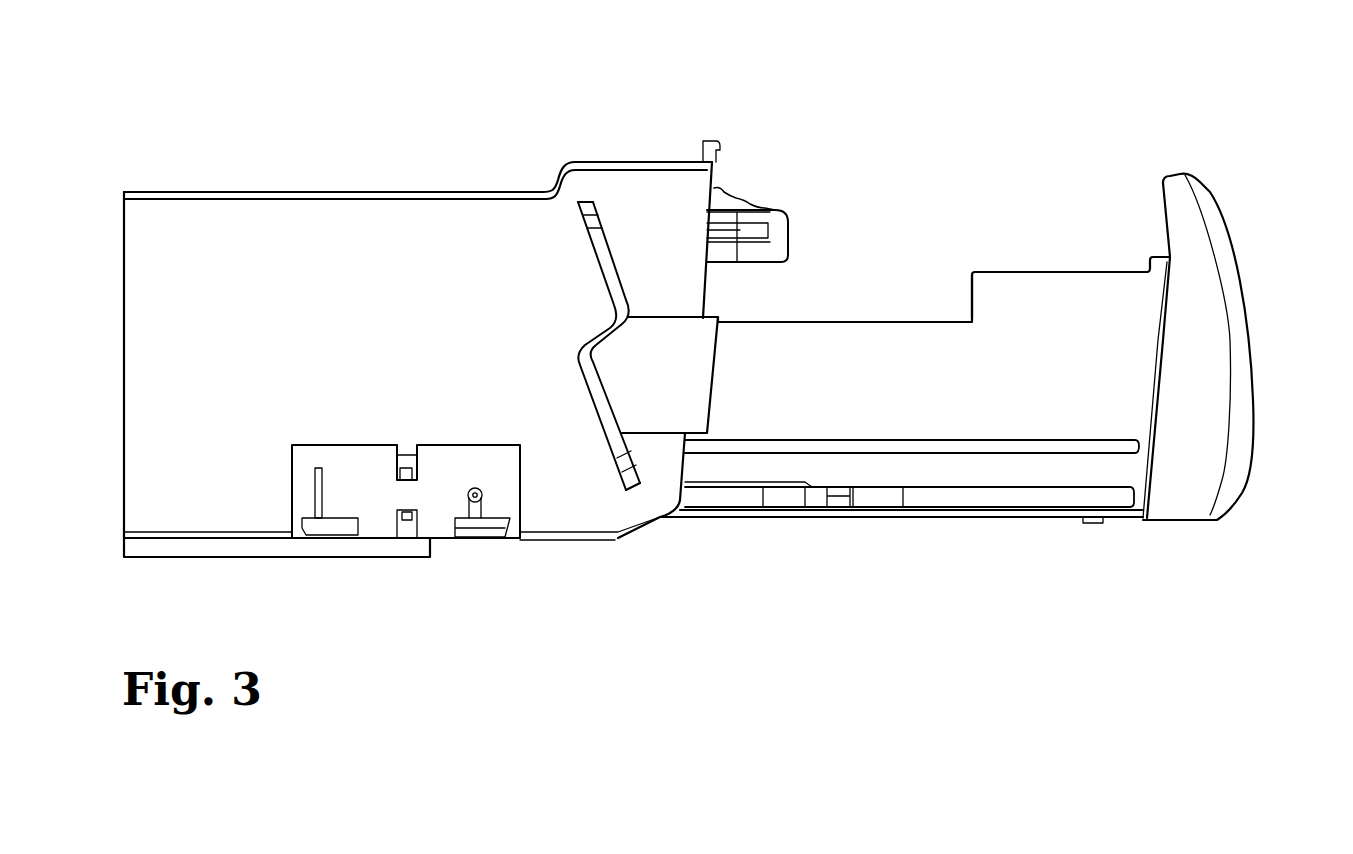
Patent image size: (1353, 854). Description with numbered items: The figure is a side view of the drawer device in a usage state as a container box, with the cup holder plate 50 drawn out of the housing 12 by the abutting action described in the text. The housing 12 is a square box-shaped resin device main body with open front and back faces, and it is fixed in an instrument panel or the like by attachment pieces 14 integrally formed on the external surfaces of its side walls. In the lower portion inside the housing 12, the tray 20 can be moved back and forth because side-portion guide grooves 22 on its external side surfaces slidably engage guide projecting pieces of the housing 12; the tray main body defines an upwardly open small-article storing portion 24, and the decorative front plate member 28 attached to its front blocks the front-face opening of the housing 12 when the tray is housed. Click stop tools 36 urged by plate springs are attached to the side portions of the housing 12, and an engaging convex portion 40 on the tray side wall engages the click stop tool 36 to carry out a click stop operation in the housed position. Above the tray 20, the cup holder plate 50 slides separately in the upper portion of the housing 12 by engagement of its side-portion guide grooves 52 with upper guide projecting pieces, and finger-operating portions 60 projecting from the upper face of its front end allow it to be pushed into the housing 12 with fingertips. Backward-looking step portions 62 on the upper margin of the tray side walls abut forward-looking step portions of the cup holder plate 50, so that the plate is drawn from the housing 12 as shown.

The housing 12 is at (413, 178).
The attachment piece 14 is at (603, 253).
The tray 20 is at (1040, 220).
The side-portion guide groove 22 is at (1077, 447).
The small-article storing portion 24 is at (952, 408).
The decorative front plate member 28 is at (1208, 300).
The click stop tool 36 is at (478, 527).
The engaging convex portion 40 is at (810, 497).
The cup holder plate 50 is at (784, 243).
The side-portion guide groove 52 is at (738, 235).
The finger-operating portion 60 is at (716, 188).
The step portion 62 is at (970, 308).